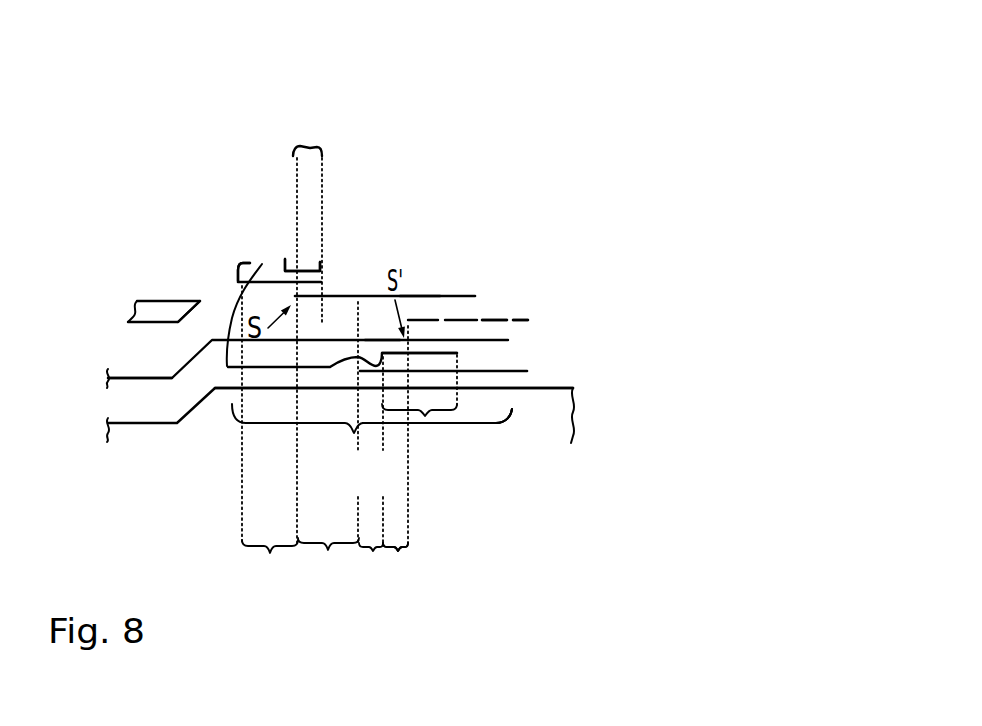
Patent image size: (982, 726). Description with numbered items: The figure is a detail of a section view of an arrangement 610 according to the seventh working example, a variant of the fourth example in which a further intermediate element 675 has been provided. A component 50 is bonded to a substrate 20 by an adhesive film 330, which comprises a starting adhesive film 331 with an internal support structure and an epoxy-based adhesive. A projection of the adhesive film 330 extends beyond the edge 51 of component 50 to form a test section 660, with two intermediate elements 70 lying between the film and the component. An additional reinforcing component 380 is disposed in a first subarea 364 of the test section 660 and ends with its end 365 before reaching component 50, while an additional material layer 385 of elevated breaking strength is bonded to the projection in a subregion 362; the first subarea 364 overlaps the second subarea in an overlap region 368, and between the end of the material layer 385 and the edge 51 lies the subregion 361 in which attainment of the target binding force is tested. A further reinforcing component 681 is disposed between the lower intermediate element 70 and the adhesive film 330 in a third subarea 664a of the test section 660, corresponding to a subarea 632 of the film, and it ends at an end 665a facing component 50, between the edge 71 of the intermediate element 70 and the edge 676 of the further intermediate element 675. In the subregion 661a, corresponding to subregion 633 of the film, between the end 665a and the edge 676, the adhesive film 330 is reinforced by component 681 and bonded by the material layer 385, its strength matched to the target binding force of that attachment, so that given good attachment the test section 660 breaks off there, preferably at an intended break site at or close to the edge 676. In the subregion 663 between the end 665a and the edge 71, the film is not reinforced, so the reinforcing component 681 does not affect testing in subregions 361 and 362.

The substrate 20 is at (550, 398).
The component 50 is at (161, 300).
The edge of component 51 is at (198, 322).
The intermediate element 70 is at (514, 369).
The edge of the intermediate element 71 is at (351, 381).
The adhesive film 330 is at (228, 367).
The starting adhesive film 331 is at (150, 378).
The subregion of the test section 361 is at (270, 442).
The subregion of the test section 362 is at (331, 450).
The first subarea of the test section 364 is at (262, 264).
The end of the first subarea 365 is at (225, 269).
The overlap region 368 is at (307, 146).
The additional reinforcing component 380 is at (251, 287).
The additional material layer 385 is at (412, 297).
The arrangement 610 is at (525, 175).
The subarea of the adhesive film 632 is at (496, 490).
The subregion of the adhesive film 633 is at (500, 612).
The test section 660 is at (372, 449).
The subregion of the test section 661a is at (399, 552).
The subregion 663 is at (373, 552).
The third subarea of the test section 664a is at (425, 424).
The end of the third subarea 665a is at (381, 336).
The further intermediate element 675 is at (495, 319).
The edge of the further intermediate element 676 is at (419, 313).
The further reinforcing component 681 is at (427, 352).